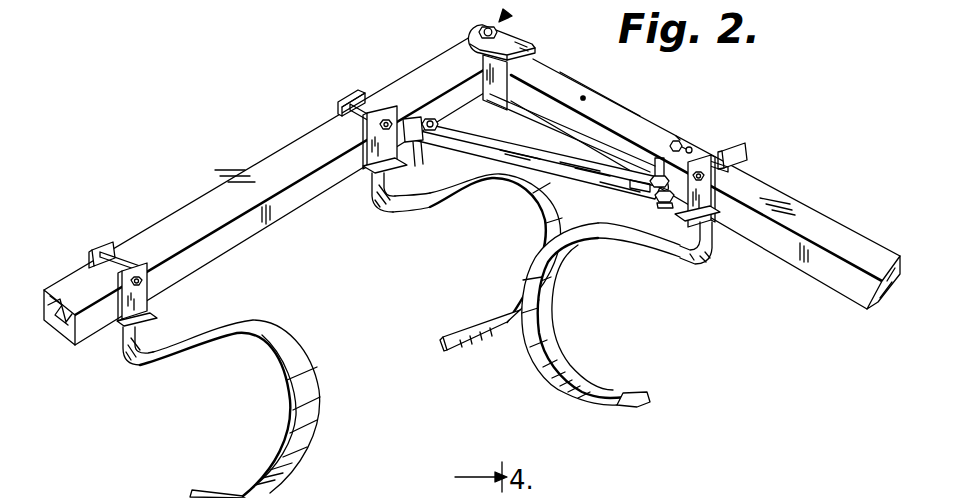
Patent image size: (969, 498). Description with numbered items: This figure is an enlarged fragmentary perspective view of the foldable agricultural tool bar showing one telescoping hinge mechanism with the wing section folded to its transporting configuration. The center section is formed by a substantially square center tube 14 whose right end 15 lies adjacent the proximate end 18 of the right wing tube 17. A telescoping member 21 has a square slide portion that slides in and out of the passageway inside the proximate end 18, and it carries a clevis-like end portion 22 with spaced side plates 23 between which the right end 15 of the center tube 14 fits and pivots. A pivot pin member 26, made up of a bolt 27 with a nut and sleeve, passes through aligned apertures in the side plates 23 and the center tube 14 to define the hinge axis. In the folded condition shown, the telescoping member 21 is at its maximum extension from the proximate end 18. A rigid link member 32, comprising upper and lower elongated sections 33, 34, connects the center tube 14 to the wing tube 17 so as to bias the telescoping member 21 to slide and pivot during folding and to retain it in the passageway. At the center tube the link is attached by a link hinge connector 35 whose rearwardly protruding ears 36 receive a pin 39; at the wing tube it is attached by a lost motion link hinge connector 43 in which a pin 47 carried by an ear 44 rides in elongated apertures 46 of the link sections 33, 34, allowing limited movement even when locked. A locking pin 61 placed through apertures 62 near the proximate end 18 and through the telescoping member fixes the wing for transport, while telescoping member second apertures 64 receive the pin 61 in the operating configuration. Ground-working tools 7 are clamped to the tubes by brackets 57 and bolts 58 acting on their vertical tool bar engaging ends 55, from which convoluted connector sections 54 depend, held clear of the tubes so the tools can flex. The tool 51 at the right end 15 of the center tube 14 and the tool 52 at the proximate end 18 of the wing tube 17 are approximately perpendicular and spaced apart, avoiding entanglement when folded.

The ground-working tools 7 is at (283, 335).
The center tube 14 is at (254, 178).
The right end of center tube 15 is at (463, 58).
The right wing tube 17 is at (812, 226).
The proximate end of right tube 18 is at (678, 138).
The telescoping member 21 is at (612, 98).
The clevis end portion 22 is at (509, 13).
The side plates 23 is at (467, 40).
The pivot pin member 26 is at (499, 29).
The bolt 27 is at (487, 27).
The rigid link member 32 is at (560, 150).
The upper elongated section 33 is at (548, 150).
The lower elongated section 34 is at (615, 190).
The link hinge connector 35 is at (418, 160).
The ears 36 is at (418, 116).
The pin 39 is at (434, 121).
The lost motion link hinge connector 43 is at (660, 203).
The ears 44 is at (670, 208).
The elongated apertures 46 is at (643, 175).
The pin 47 is at (658, 156).
The ground-working tools at center section ends 51 is at (483, 188).
The ground-working tools at wing proximate ends 52 is at (643, 247).
The convoluted connector section 54 is at (125, 360).
The tool bar engaging end 55 is at (147, 285).
The brackets 57 is at (92, 251).
The bolts 58 is at (125, 258).
The locking pins 61 is at (689, 146).
The apertures 62 is at (672, 142).
The telescoping member second apertures 64 is at (583, 96).